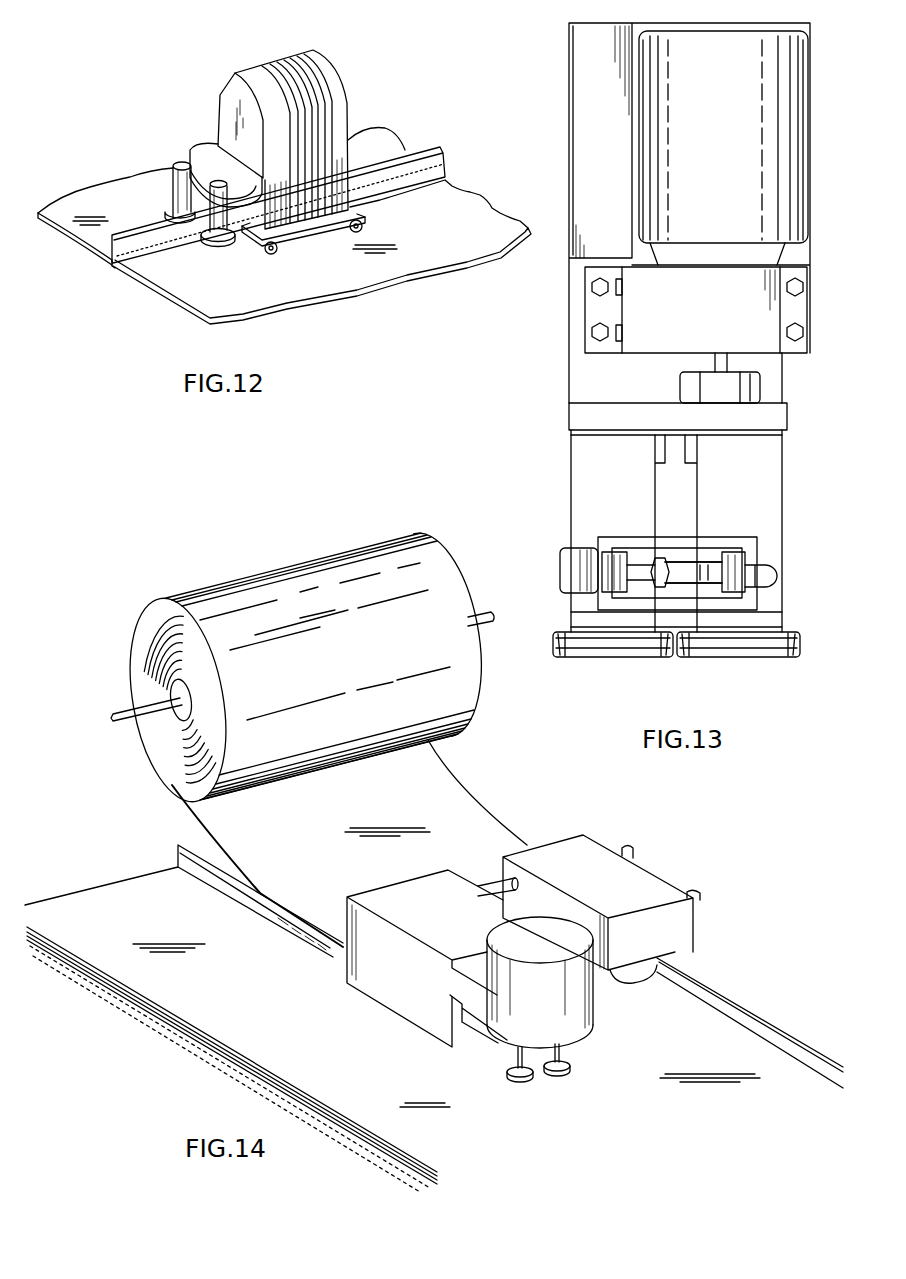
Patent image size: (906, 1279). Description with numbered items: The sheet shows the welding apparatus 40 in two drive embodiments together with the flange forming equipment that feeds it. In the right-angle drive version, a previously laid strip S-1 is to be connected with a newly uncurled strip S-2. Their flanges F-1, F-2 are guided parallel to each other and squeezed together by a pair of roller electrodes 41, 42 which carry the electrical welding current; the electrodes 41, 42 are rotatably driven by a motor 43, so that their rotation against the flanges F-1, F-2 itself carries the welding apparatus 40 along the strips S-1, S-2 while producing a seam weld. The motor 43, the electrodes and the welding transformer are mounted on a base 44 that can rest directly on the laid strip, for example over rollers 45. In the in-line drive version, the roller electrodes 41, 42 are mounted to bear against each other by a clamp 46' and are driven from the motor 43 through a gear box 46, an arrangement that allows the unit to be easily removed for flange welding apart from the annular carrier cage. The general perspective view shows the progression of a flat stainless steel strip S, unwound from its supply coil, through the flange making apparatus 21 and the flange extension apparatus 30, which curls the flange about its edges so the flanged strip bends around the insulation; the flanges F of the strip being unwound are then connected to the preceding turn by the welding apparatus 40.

In FIG. 12, the motor 43 is at (315, 50).
In FIG. 13, the motor 43 is at (733, 167).
In FIG. 12, the strip previously laid S-1 is at (472, 204).
In FIG. 12, the newly uncurled strip S-2 is at (378, 148).
In FIG. 12, the flange F-1 is at (125, 275).
In FIG. 12, the flange F-2 is at (83, 245).
In FIG. 12, the roller electrode 42 is at (163, 212).
In FIG. 13, the roller electrode 42 is at (745, 657).
In FIG. 12, the roller electrode 41 is at (220, 243).
In FIG. 13, the roller electrode 41 is at (628, 657).
In FIG. 12, the base 44 is at (348, 207).
In FIG. 12, the rollers 45 is at (278, 250).
In FIG. 13, the welding apparatus 40 is at (792, 490).
In FIG. 14, the welding apparatus 40 is at (583, 1013).
In FIG. 13, the gear box 46 is at (696, 310).
In FIG. 13, the clamp 46' is at (751, 557).
In FIG. 14, the stainless steel strip S is at (322, 870).
In FIG. 14, the flange extension apparatus 30 is at (680, 930).
In FIG. 14, the flange making apparatus 21 is at (591, 848).
In FIG. 14, the flanges F is at (765, 1018).